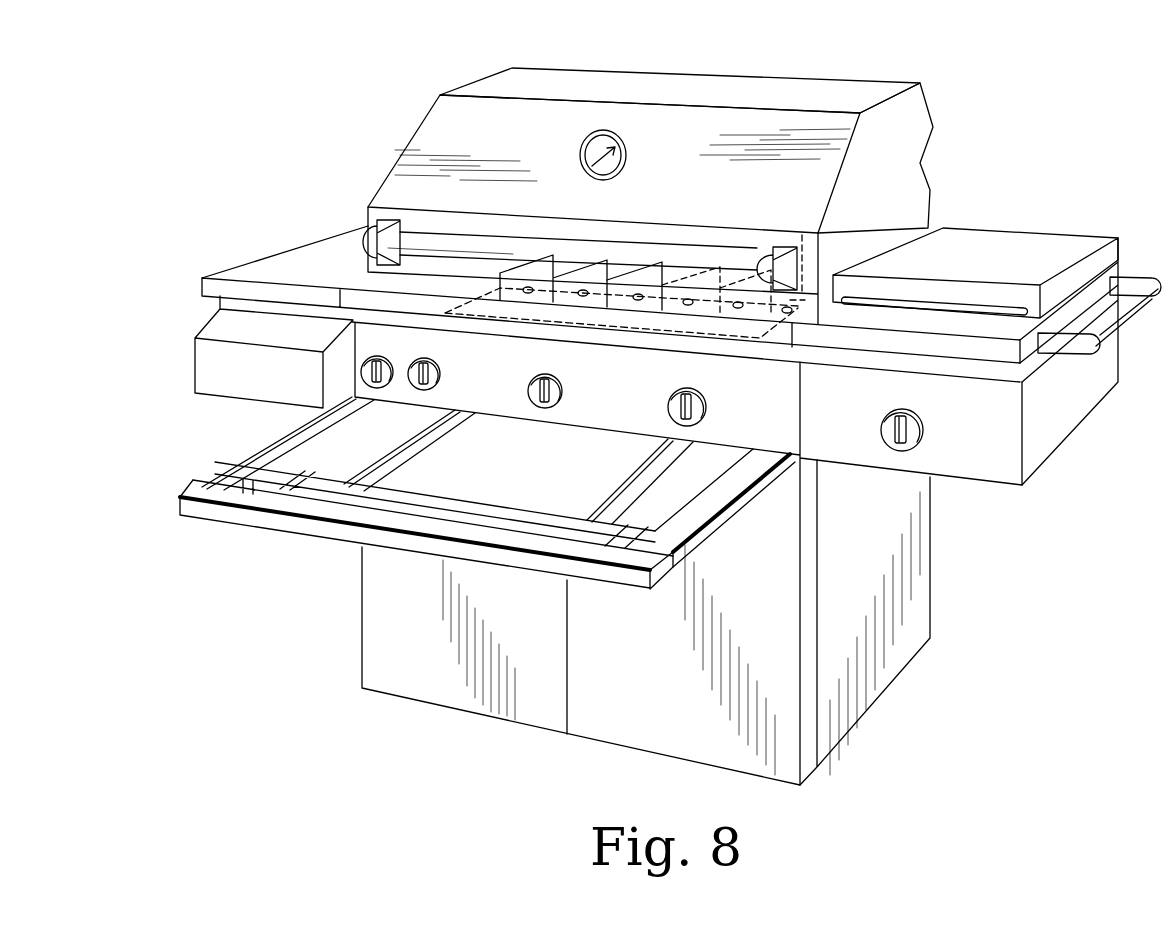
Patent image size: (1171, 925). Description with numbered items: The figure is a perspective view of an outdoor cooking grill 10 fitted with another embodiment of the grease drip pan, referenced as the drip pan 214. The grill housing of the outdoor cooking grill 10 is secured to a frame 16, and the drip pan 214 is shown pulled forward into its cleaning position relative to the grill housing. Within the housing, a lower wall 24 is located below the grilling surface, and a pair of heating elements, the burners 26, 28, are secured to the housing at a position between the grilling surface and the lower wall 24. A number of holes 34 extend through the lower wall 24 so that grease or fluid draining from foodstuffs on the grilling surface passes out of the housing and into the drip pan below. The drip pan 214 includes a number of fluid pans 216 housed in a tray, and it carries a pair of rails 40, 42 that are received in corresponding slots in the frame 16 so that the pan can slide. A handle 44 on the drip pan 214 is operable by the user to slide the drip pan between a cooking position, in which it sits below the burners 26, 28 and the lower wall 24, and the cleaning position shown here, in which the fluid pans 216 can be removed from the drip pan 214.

The outdoor cooking grill 10 is at (1042, 119).
The frame 16 is at (954, 607).
The lower wall 24 is at (693, 293).
The burner 26 is at (522, 275).
The burner 28 is at (802, 235).
The holes 34 is at (640, 275).
The rail 40 is at (292, 442).
The rail 42 is at (720, 517).
The handle 44 is at (270, 525).
The drip pan 214 is at (428, 493).
The fluid pans 216 is at (617, 492).